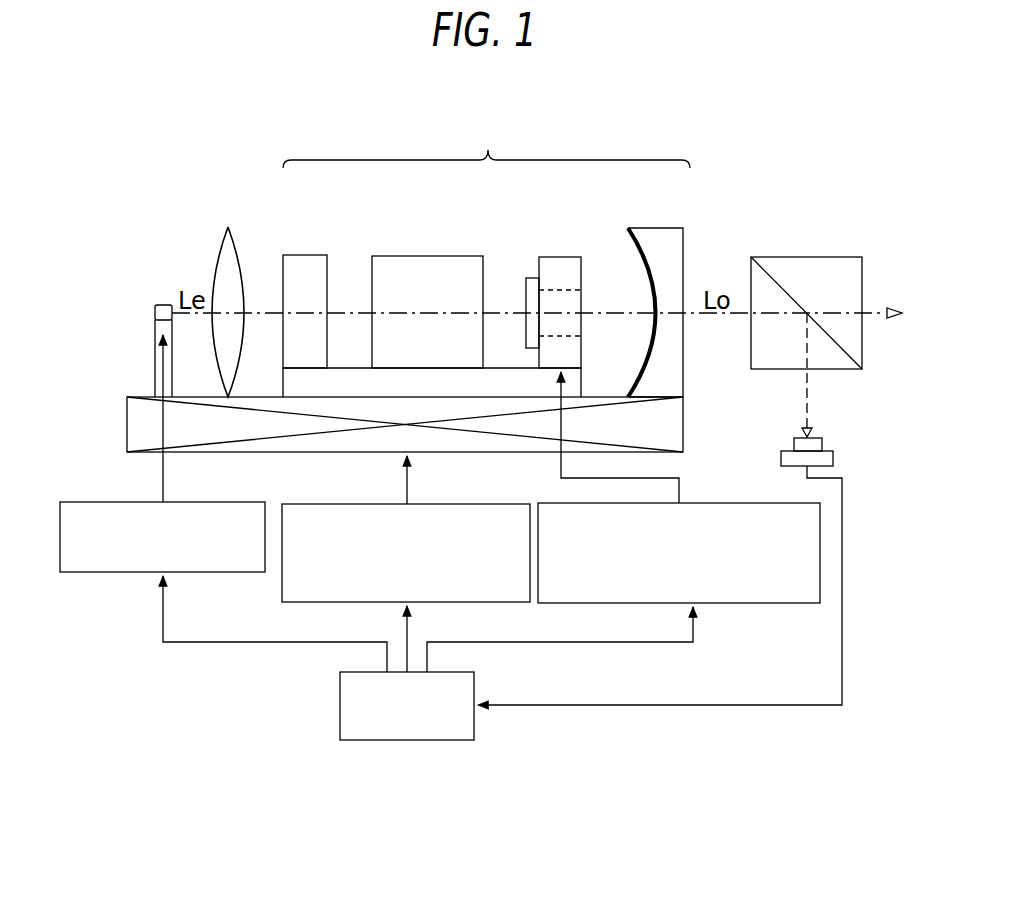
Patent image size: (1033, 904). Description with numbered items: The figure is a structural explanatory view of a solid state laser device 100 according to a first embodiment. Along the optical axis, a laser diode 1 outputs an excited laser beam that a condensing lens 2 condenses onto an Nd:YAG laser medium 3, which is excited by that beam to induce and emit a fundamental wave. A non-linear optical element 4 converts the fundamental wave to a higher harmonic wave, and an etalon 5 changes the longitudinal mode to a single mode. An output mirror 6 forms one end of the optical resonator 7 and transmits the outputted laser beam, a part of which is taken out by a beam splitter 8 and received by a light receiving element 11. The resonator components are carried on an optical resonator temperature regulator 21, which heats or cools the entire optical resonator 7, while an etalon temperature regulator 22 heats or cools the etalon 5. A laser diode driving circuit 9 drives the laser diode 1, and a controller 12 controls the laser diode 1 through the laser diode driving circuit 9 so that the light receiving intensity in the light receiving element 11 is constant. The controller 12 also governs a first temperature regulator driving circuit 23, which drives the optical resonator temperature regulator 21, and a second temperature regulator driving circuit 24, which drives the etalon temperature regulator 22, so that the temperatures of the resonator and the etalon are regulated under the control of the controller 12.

The solid state laser device 100 is at (250, 136).
The laser diode 1 is at (160, 305).
The condensing lens 2 is at (230, 227).
The Nd:YAG laser medium 3 is at (306, 255).
The non-linear optical element 4 is at (432, 256).
The etalon 5 is at (530, 278).
The output mirror 6 is at (657, 228).
The optical resonator 7 is at (486, 145).
The beam splitter 8 is at (806, 257).
The laser diode driving circuit 9 is at (120, 502).
The light receiving element 11 is at (781, 457).
The controller 12 is at (415, 740).
The optical resonator temperature regulator 21 is at (297, 447).
The etalon temperature regulator 22 is at (561, 257).
The first temperature regulator driving circuit 23 is at (281, 590).
The second temperature regulator driving circuit 24 is at (730, 603).